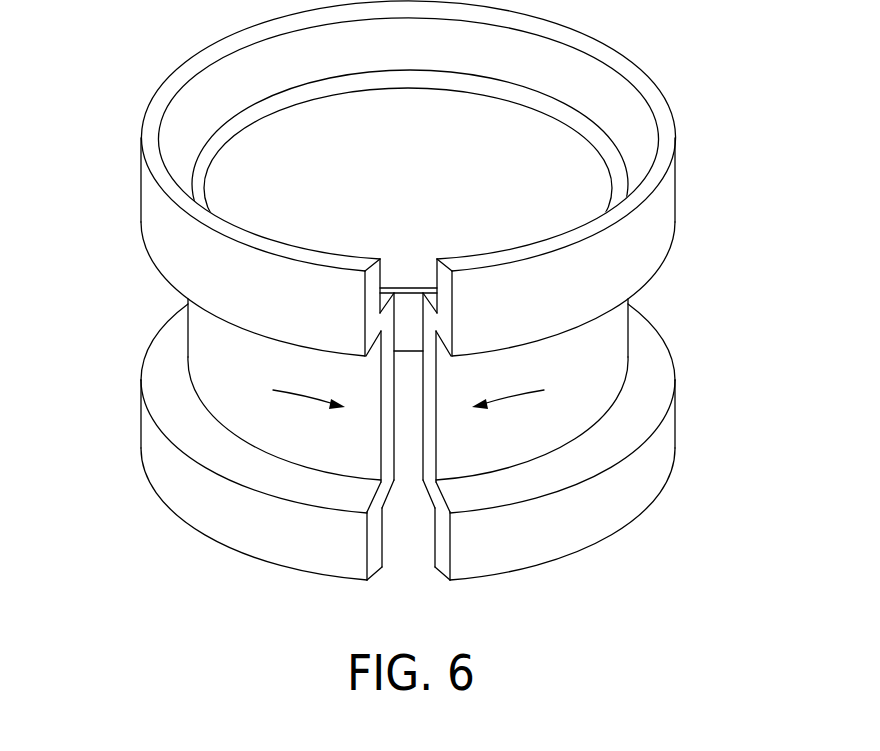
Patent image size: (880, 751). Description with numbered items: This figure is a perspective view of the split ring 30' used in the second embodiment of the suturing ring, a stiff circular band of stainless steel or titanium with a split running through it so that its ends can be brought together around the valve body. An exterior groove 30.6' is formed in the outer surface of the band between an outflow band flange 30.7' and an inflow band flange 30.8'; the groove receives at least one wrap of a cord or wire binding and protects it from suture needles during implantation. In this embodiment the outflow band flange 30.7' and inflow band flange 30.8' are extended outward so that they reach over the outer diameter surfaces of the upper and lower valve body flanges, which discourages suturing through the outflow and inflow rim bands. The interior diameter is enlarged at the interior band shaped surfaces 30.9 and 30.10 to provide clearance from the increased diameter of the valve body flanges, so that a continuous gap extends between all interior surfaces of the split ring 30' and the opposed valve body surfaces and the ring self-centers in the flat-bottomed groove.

The split ring 30' is at (419, 290).
The exterior groove 30.6' is at (348, 387).
The outflow band flange 30.7' is at (455, 178).
The inflow band flange 30.8' is at (421, 442).
The interior band shaped surface 30.9 is at (596, 78).
The interior band shaped surface 30.10 is at (408, 298).